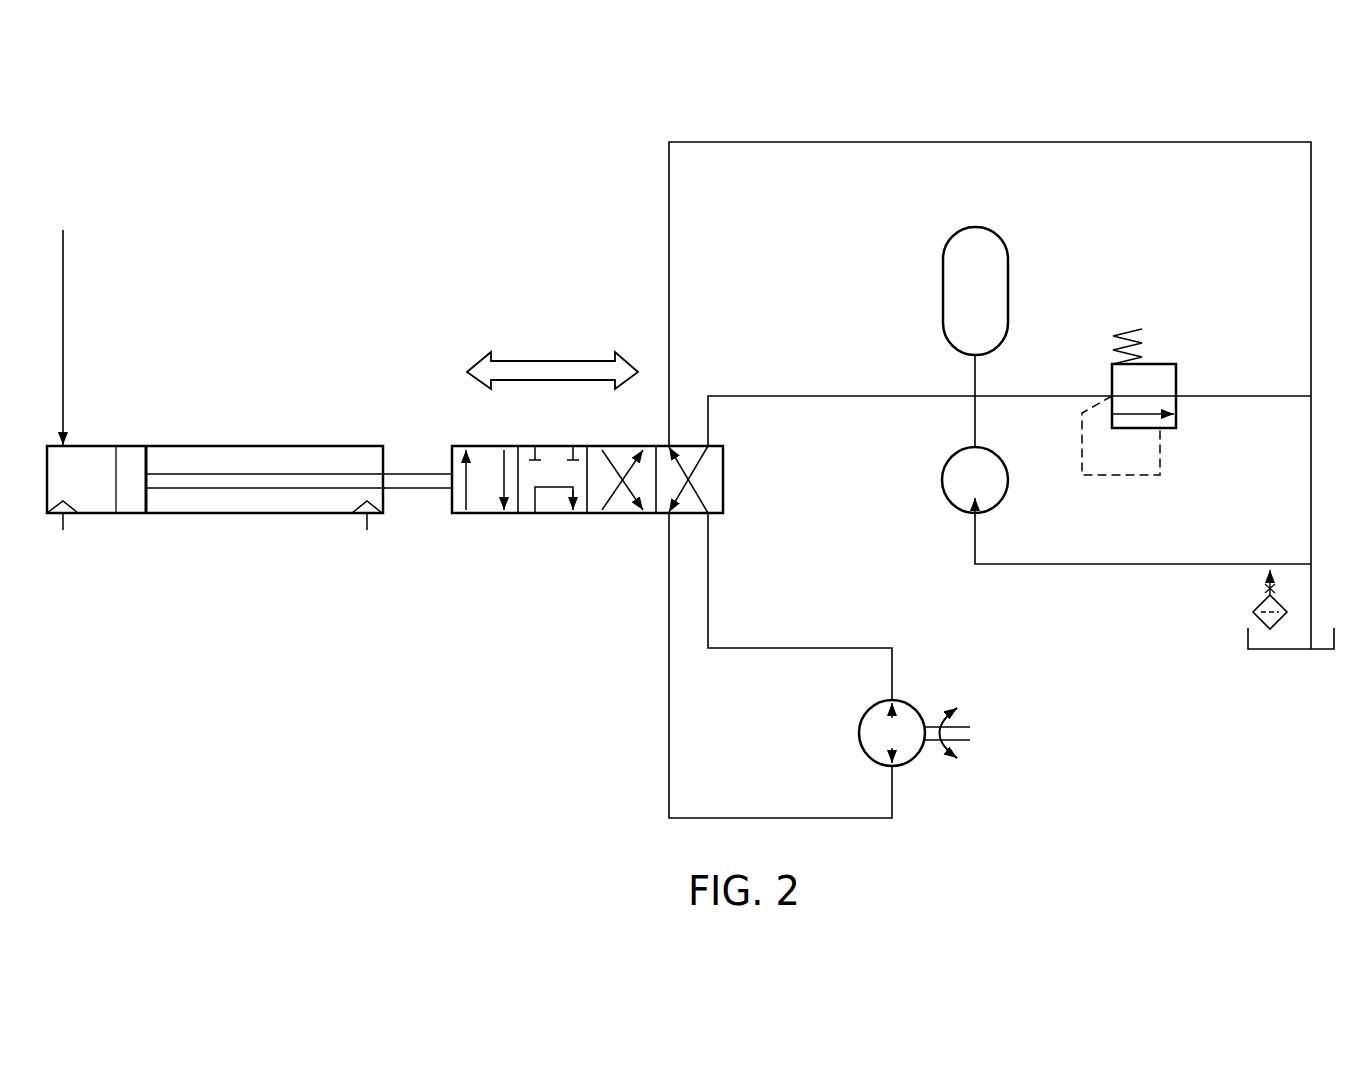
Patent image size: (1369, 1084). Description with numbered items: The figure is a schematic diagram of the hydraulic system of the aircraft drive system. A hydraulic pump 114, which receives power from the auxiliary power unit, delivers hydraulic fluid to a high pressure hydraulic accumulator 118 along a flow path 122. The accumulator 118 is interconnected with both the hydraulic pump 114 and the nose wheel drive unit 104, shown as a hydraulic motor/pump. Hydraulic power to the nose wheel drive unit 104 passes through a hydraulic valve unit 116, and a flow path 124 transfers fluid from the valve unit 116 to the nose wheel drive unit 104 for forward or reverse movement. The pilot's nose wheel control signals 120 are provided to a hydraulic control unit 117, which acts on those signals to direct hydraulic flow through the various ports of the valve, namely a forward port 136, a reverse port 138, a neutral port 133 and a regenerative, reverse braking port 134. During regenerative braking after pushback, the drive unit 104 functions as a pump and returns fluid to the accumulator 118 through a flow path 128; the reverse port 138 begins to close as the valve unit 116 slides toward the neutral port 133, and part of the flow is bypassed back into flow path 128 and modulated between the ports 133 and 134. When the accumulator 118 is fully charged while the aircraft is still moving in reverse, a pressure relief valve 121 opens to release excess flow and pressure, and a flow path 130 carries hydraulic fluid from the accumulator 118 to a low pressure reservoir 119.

The nose wheel drive unit 104 is at (912, 705).
The hydraulic pump 114 is at (1000, 498).
The hydraulic valve unit 116 is at (480, 446).
The hydraulic control unit 117 is at (308, 445).
The hydraulic accumulator 118 is at (943, 291).
The low pressure reservoir 119 is at (1296, 628).
The nose wheel control signals 120 is at (63, 273).
The pressure relief valve 121 is at (1176, 379).
The flow path 122 is at (975, 378).
The flow path 124 is at (669, 668).
The flow path 128 is at (808, 648).
The flow path 130 is at (990, 142).
The neutral port 133 is at (552, 516).
The regenerative reverse braking port 134 is at (622, 516).
The forward port 136 is at (723, 479).
The reverse port 138 is at (487, 516).